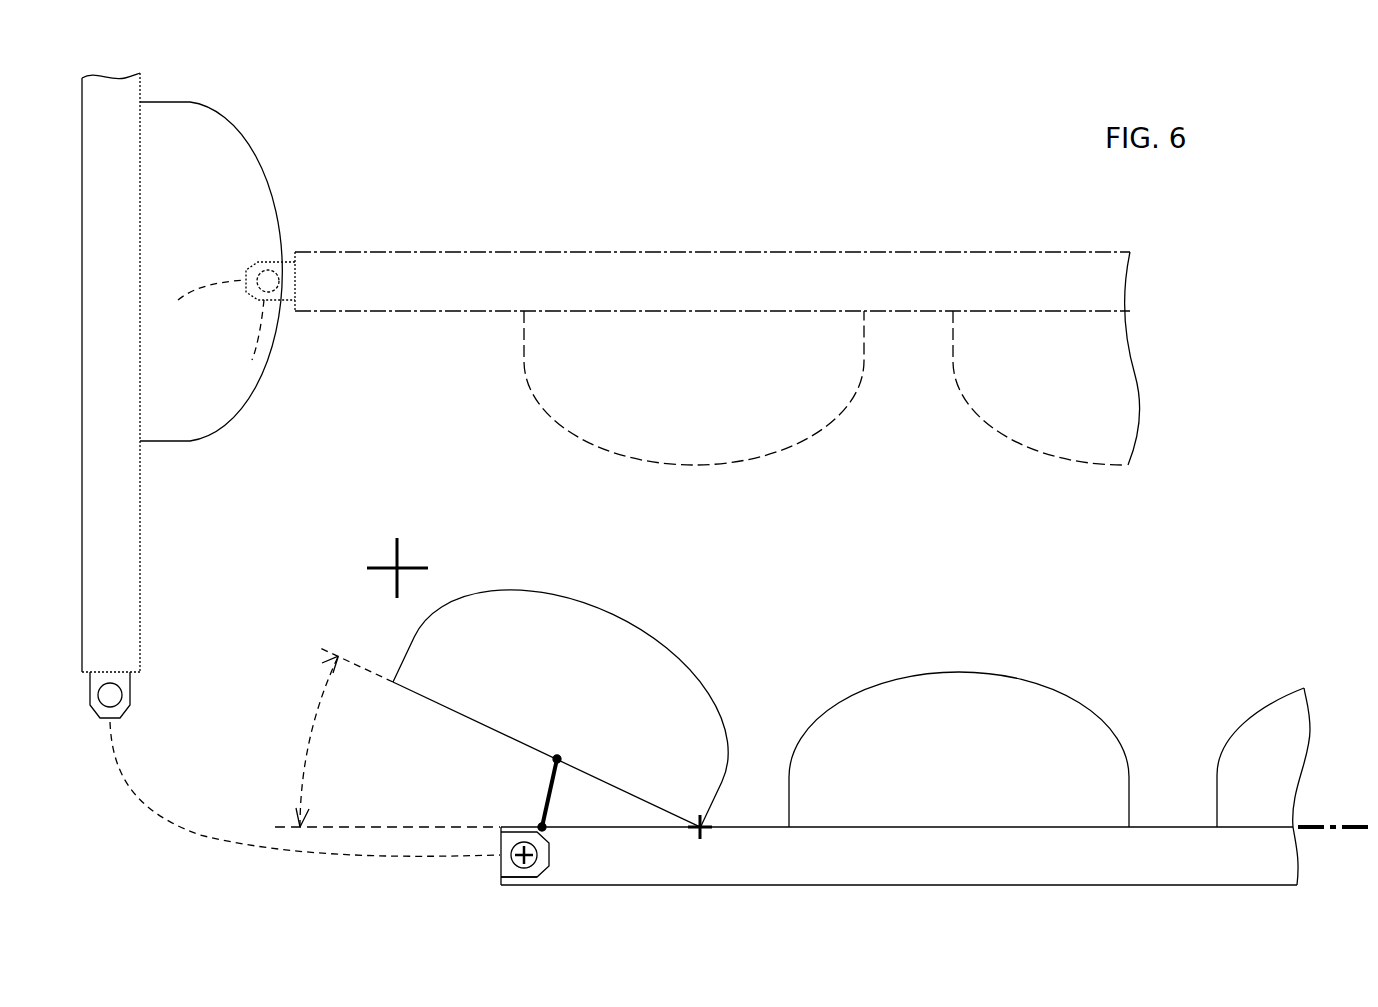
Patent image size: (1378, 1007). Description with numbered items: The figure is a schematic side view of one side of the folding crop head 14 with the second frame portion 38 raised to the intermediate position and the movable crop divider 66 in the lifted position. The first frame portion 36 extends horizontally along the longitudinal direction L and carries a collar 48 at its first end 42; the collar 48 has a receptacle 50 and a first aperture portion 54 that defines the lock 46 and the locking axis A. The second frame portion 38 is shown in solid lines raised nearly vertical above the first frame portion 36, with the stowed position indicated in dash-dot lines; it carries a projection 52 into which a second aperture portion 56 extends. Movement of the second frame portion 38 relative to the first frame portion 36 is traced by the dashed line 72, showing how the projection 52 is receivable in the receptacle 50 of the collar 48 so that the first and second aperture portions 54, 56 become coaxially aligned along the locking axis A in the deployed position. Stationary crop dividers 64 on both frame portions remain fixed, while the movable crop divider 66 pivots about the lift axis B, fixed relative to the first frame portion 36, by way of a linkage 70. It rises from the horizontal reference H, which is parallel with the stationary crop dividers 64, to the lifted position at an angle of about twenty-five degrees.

The crop head 14 is at (574, 114).
The second frame portion 38 is at (82, 310).
The stationary crop dividers 64 is at (722, 448).
The first movable crop divider 66 is at (589, 684).
The projection 52 is at (262, 262).
The second aperture portion 56 is at (258, 300).
The dashed line 72 is at (148, 360).
The linkage 70 is at (548, 792).
The first end 42 is at (593, 897).
The first frame portion 36 is at (1172, 827).
The receptacle 50 is at (503, 862).
The lock 46 is at (490, 884).
The collar 48 is at (515, 885).
The first aperture portion 54 is at (528, 868).
The locking axis A is at (535, 850).
The lift axis B is at (704, 832).
The horizontal reference H is at (415, 823).
The longitudinal direction L is at (1347, 827).